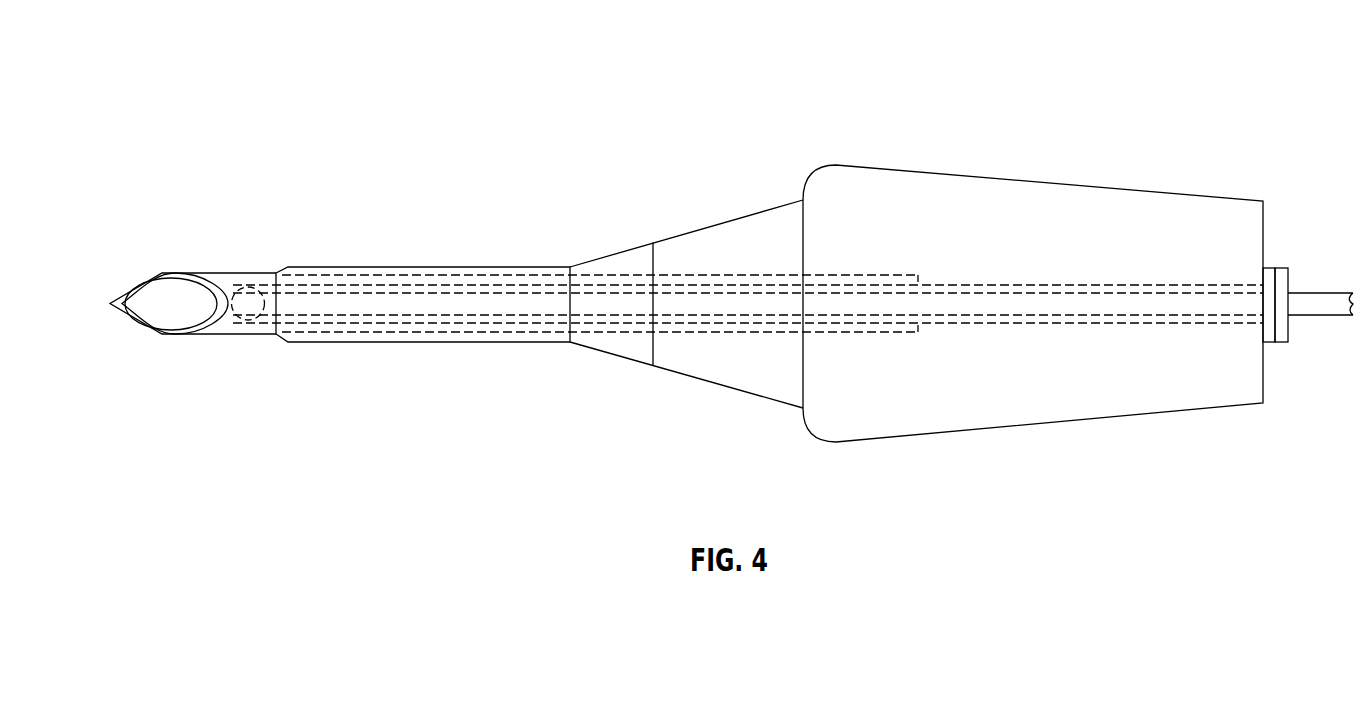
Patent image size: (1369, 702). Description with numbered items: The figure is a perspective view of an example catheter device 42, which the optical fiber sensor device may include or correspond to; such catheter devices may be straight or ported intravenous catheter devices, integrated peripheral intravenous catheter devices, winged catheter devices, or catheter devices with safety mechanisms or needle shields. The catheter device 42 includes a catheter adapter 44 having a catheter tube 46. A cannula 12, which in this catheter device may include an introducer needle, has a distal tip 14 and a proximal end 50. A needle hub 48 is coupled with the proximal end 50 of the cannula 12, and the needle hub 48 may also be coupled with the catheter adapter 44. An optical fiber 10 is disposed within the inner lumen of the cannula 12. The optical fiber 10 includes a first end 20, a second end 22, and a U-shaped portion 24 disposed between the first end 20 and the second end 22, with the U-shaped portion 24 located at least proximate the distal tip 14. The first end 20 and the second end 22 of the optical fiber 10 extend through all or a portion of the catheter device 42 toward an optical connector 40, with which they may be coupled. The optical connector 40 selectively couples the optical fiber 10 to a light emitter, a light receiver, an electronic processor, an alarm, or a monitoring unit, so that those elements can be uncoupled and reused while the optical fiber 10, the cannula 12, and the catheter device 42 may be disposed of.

The catheter device 42 is at (271, 71).
The distal tip 14 is at (110, 304).
The U-shaped portion 24 is at (262, 300).
The catheter tube 46 is at (343, 266).
The optical fiber 10 is at (459, 292).
The cannula 12 is at (685, 274).
The catheter adapter 44 is at (775, 207).
The needle hub 48 is at (999, 177).
The proximal end 50 is at (920, 280).
The first end 20 is at (1207, 286).
The second end 22 is at (1208, 323).
The optical connector 40 is at (1270, 271).